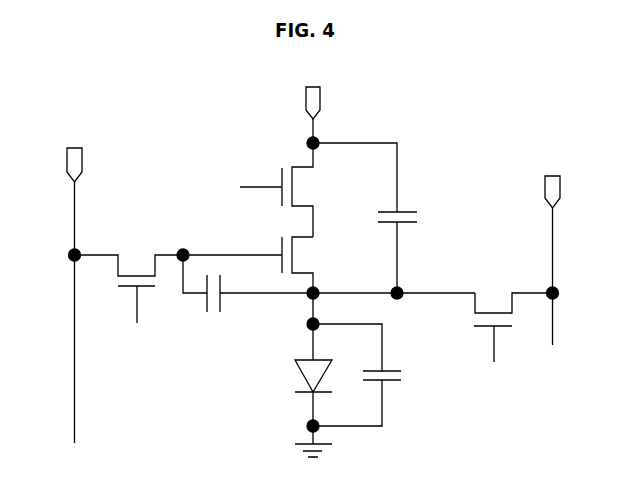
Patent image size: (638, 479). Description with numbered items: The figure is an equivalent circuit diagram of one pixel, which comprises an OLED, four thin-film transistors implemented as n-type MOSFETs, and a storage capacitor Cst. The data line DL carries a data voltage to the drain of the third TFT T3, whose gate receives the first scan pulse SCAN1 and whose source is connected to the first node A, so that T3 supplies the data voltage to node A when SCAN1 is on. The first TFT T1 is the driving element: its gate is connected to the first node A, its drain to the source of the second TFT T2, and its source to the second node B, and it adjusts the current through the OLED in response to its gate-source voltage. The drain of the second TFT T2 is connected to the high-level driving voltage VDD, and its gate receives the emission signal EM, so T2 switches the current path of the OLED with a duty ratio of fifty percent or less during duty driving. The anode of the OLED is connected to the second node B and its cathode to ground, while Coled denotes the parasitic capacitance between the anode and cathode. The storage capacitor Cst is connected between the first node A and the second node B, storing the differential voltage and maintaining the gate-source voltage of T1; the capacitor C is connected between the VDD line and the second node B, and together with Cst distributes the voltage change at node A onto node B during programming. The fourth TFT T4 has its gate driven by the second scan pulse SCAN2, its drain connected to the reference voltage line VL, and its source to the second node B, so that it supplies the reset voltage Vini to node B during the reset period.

The data line DL is at (72, 226).
The third TFT T3 is at (129, 276).
The first scan pulse SCAN1 is at (136, 341).
The first node A is at (229, 261).
The storage capacitor Cst is at (256, 308).
The high-level driving voltage VDD is at (314, 106).
The second TFT T2 is at (310, 190).
The emission signal EM is at (249, 186).
The first TFT T1 is at (310, 265).
The second node B is at (391, 297).
The capacitor C is at (371, 218).
The element OLED is at (287, 387).
The parasitic capacitance of the OLED Coled is at (377, 375).
The fourth TFT T4 is at (513, 315).
The second scan pulse SCAN2 is at (493, 379).
The reset voltage Vini is at (552, 180).
The reference voltage line (REF line) VL is at (550, 227).